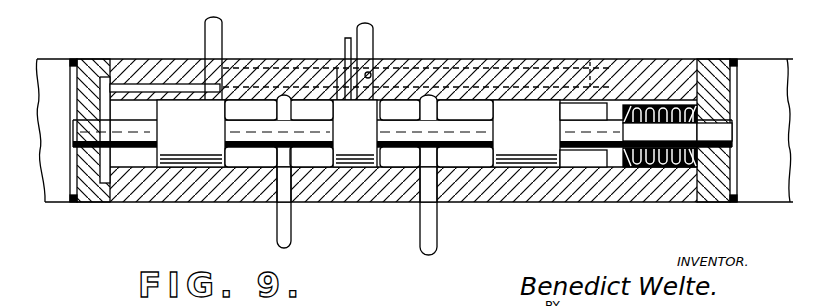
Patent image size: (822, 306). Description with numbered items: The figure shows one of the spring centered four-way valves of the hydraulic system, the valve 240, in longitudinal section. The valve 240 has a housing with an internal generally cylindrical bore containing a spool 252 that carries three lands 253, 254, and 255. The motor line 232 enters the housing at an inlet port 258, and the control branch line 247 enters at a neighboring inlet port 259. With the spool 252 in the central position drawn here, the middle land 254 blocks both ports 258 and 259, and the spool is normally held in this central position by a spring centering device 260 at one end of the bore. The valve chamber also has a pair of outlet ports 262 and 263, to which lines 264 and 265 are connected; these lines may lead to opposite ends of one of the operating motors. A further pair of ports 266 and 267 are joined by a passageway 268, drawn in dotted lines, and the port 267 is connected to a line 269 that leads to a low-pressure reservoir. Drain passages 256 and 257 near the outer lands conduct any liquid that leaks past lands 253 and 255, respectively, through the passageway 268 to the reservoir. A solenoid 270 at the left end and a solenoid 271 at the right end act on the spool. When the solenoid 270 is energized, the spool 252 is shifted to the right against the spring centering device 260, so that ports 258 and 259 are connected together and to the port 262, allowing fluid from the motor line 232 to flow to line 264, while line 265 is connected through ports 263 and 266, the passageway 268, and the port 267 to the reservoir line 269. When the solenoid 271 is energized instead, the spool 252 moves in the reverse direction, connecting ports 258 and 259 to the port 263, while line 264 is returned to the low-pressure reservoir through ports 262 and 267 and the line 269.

The motor line 232 is at (373, 33).
The spring centered four-way valve 240 is at (602, 57).
The control branch line 247 is at (347, 42).
The spool 252 is at (573, 120).
The land 253 is at (183, 170).
The land 254 is at (345, 170).
The land 255 is at (552, 172).
The drain passage 256 is at (133, 87).
The drain passage 257 is at (590, 62).
The inlet port 258 is at (372, 77).
The inlet port 259 is at (338, 68).
The spring centering device 260 is at (653, 127).
The outlet port 262 is at (275, 183).
The outlet port 263 is at (440, 188).
The line 264 is at (276, 233).
The line 265 is at (438, 248).
The port 266 is at (507, 100).
The port 267 is at (213, 99).
The passageway 268 is at (468, 70).
The line 269 is at (222, 30).
The solenoid 270 is at (40, 59).
The solenoid 271 is at (787, 59).